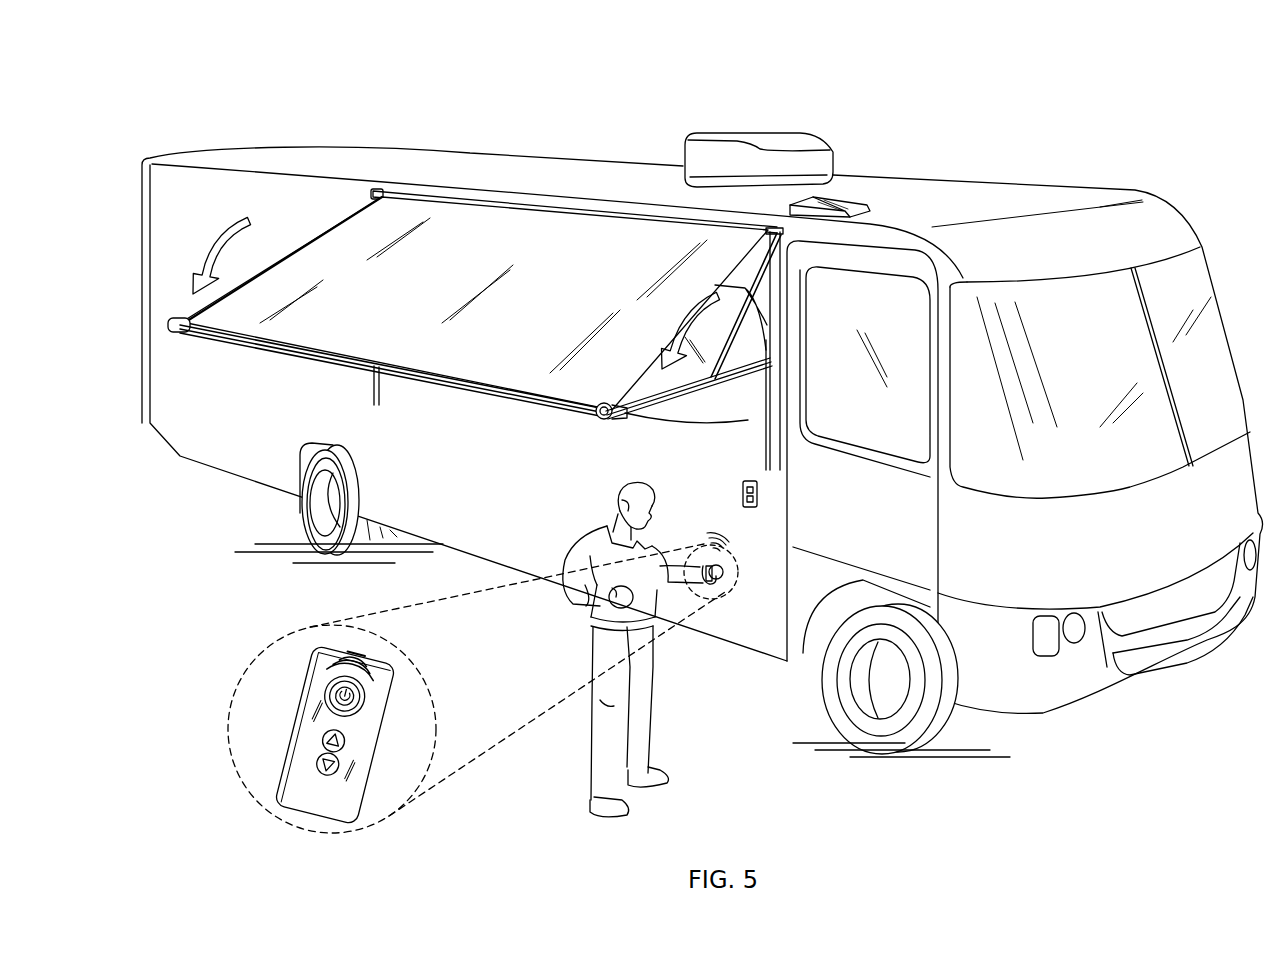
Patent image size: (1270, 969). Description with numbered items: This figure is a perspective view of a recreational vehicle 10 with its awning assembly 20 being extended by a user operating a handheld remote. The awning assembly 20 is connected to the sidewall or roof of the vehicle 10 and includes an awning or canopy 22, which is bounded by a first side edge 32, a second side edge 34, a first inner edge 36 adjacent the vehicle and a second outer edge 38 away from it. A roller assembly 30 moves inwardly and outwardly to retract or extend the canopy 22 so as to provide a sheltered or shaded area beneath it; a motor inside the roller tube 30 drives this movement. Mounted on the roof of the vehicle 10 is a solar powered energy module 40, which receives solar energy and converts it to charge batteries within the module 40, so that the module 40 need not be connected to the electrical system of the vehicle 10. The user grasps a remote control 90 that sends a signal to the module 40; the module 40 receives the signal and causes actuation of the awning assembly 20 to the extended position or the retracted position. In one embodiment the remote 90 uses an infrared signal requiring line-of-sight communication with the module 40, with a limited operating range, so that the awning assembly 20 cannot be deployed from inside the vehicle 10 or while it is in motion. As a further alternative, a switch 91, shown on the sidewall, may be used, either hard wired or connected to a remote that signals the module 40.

The recreational vehicle 10 is at (1172, 92).
The awning assembly 20 is at (289, 392).
The canopy 22 is at (415, 308).
The roller assembly 30 is at (497, 405).
The first side edge 32 is at (655, 352).
The second side edge 34 is at (302, 249).
The first inner edge 36 is at (512, 198).
The second outer edge 38 is at (333, 356).
The solar powered energy module 40 is at (868, 180).
The remote control 90 is at (712, 584).
The switch 91 is at (742, 490).